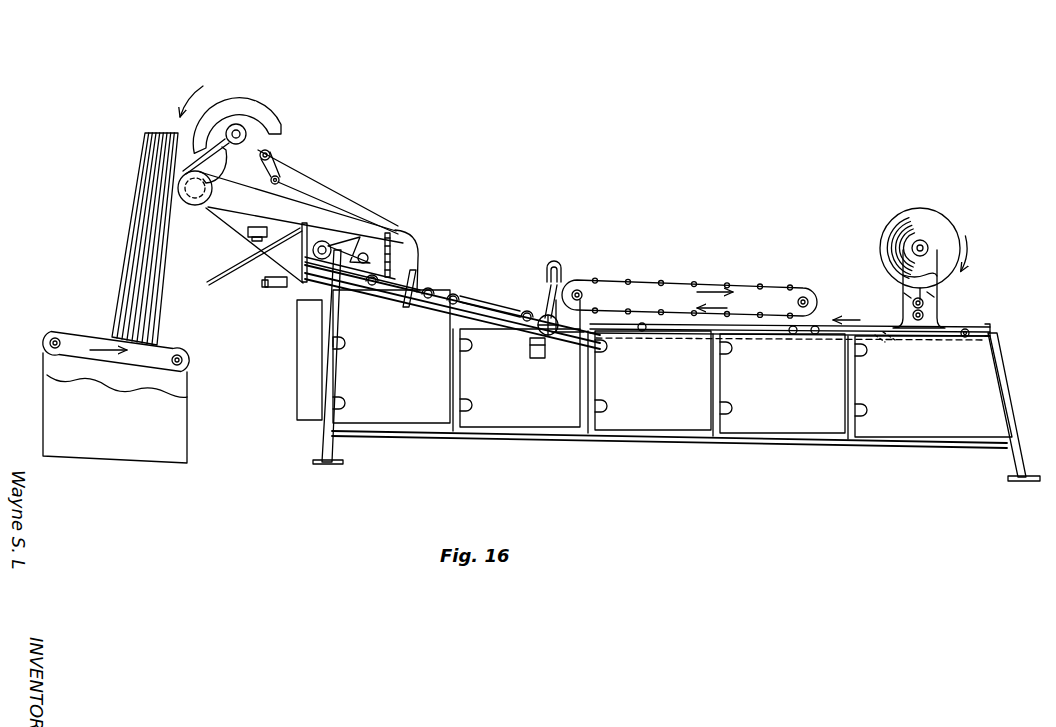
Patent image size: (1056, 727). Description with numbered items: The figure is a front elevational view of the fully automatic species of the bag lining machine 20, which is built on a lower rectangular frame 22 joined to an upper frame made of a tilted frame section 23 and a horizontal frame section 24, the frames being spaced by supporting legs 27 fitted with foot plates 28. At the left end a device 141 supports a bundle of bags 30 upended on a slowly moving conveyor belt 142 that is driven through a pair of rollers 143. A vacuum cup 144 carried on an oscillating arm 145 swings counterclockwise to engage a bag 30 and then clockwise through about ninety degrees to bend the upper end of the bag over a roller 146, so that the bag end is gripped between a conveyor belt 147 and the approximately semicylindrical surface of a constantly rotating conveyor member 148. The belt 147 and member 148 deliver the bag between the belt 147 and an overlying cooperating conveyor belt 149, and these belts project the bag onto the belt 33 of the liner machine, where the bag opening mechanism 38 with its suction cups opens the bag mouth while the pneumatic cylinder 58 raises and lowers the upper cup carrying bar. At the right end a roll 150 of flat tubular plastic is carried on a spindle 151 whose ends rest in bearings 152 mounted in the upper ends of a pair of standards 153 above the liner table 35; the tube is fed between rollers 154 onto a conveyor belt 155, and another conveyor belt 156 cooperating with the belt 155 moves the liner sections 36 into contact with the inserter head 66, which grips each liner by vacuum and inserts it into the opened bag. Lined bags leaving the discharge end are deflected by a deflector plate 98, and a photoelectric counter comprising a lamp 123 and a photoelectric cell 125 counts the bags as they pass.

The bag 30 is at (140, 197).
The conveyor member 148 is at (255, 102).
The vacuum cup 144 is at (223, 157).
The oscillating arm 145 is at (208, 186).
The roller 146 is at (193, 203).
The conveyor belt 147 is at (297, 207).
The cooperating conveyor belt 149 is at (343, 207).
The photoelectric cell 125 is at (248, 232).
The deflector plate 98 is at (206, 283).
The lamp 123 is at (268, 288).
The supporting table 33 is at (472, 297).
The bag opening mechanism 38 is at (540, 287).
The double acting pneumatic cylinder 58 is at (530, 357).
The liner gripping and inserting head 66 is at (588, 332).
The tilted upper frame section 23 is at (487, 328).
The supporting legs 27 is at (334, 370).
The foot plates 28 is at (345, 462).
The lower frame 22 is at (535, 433).
The bag lining machine 20 is at (778, 450).
The horizontal upper frame section 24 is at (748, 333).
The plastic liner bag 36 is at (607, 317).
The conveyor belt 156 is at (668, 277).
The roll of flat tubular plastic material 150 is at (928, 213).
The spindle 151 is at (923, 245).
The bearings 152 is at (913, 242).
The standards 153 is at (913, 267).
The feed rollers 154 is at (913, 313).
The conveyor belt 155 is at (968, 330).
The liner supporting table 35 is at (1002, 333).
The conveyor belt 142 is at (78, 335).
The rollers 143 is at (47, 348).
The bag supporting device 141 is at (193, 405).